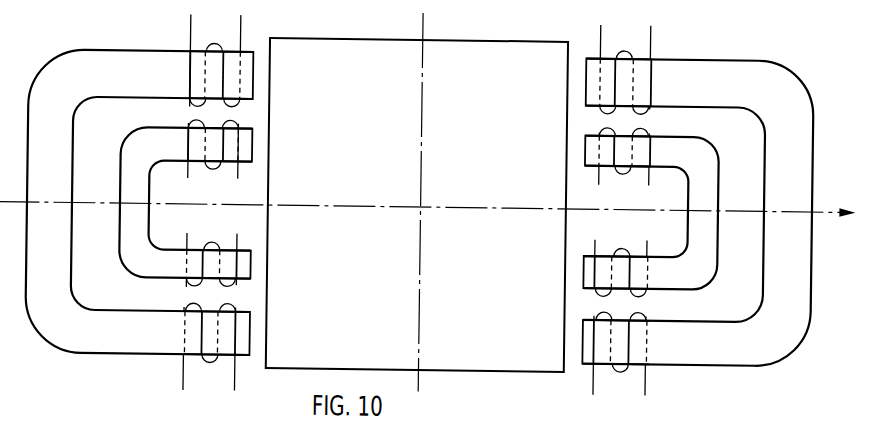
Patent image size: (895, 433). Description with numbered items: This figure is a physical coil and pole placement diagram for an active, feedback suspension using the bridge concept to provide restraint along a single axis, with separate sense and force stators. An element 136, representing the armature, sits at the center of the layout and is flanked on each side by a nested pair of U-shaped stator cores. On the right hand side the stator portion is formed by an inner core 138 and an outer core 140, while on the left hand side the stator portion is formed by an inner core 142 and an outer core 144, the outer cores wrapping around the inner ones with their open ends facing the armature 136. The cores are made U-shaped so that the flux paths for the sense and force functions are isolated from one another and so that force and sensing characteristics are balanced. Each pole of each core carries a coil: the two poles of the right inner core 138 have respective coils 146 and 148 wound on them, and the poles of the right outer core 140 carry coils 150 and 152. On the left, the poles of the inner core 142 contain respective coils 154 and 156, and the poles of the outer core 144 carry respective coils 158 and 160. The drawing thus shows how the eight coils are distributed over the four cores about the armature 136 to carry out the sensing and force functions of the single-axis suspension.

The armature 136 is at (460, 46).
The inner core 138 is at (669, 136).
The outer core 140 is at (699, 58).
The inner core 142 is at (155, 128).
The outer core 144 is at (144, 52).
The coil 146 is at (617, 148).
The coil 148 is at (602, 266).
The coil 150 is at (616, 79).
The coil 152 is at (602, 334).
The coil 154 is at (225, 139).
The coil 156 is at (240, 260).
The coil 158 is at (224, 72).
The coil 160 is at (241, 330).